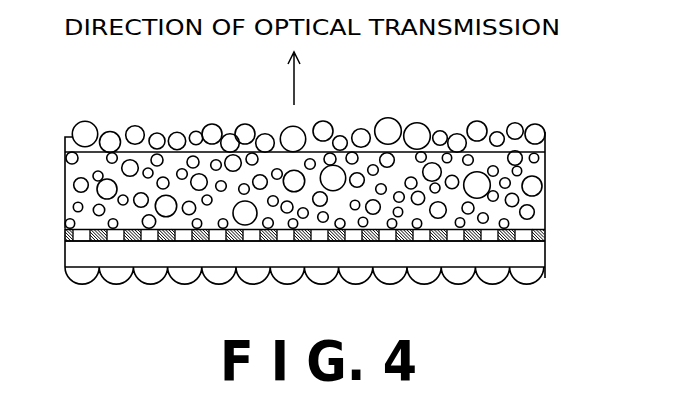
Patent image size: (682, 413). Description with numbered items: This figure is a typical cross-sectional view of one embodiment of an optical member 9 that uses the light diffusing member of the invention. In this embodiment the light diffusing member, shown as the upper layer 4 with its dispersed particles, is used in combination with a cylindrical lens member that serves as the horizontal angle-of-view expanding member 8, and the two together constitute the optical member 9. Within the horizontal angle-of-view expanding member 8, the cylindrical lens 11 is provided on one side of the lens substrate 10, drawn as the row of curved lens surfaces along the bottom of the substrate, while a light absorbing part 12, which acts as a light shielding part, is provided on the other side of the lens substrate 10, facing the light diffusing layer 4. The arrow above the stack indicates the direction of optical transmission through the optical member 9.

The optical member 9 is at (590, 158).
The light scattering layer (particles dispersed in matrix) 4 is at (51, 122).
The horizontal angle-of-view expanding member 8 is at (51, 231).
The light absorbing part 12 is at (545, 232).
The lens substrate 10 is at (527, 254).
The cylindrical lens 11 is at (535, 280).